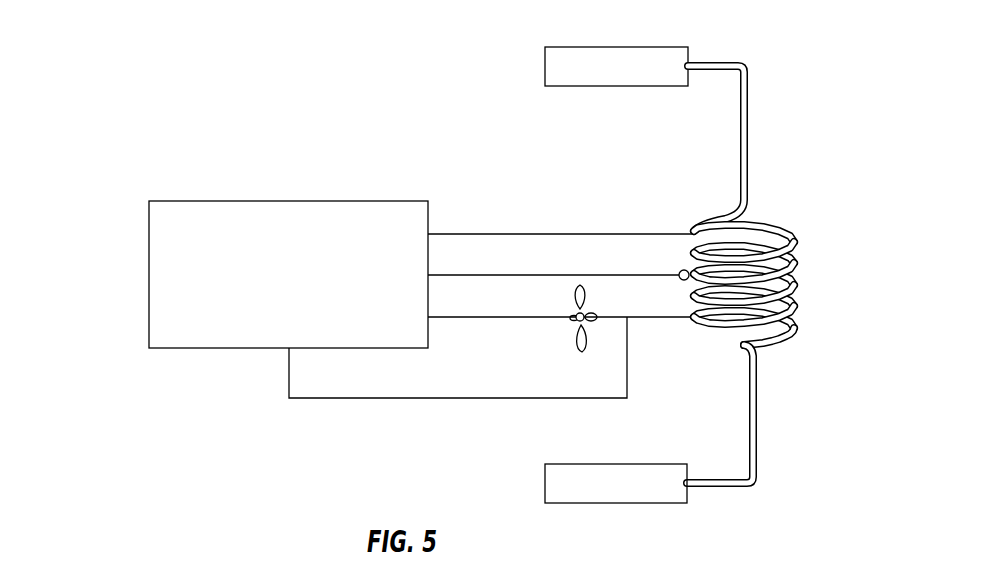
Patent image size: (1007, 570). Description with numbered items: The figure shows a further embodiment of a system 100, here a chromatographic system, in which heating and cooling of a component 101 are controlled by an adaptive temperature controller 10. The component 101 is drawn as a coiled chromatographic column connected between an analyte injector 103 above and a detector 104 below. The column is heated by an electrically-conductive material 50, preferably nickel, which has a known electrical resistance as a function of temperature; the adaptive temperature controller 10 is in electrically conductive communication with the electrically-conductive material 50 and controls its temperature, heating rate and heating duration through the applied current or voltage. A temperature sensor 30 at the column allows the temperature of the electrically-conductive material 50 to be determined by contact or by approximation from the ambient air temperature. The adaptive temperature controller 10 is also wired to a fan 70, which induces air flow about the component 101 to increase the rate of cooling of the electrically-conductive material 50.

The system 100 is at (141, 67).
The adaptive temperature controller 10 is at (170, 201).
The temperature sensor 30 is at (680, 271).
The electrically-conductive material 50 is at (786, 278).
The fan 70 is at (568, 341).
The component 101 is at (798, 240).
The analyte injector 103 is at (667, 47).
The detector 104 is at (668, 504).